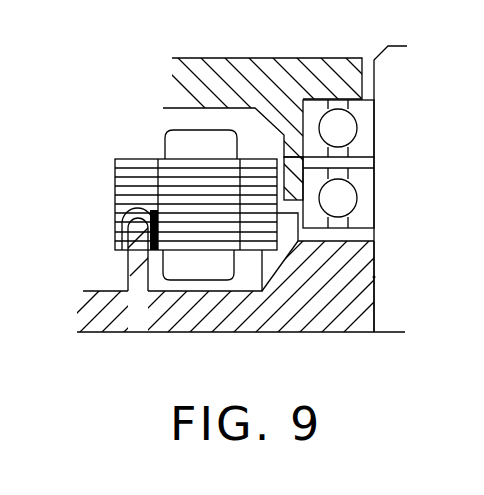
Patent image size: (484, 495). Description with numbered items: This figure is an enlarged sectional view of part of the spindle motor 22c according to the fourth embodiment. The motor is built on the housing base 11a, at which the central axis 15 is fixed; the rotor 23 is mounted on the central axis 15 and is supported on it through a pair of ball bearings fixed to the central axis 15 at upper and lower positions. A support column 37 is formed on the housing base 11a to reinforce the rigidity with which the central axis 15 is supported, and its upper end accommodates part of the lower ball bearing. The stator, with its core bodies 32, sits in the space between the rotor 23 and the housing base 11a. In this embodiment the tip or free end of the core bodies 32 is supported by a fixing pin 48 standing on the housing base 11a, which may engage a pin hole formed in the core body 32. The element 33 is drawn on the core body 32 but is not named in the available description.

The housing base 11a is at (237, 333).
The central axis 15 is at (379, 51).
The spindle motor 22c is at (137, 72).
The rotor 23 is at (233, 59).
The core body 32 is at (114, 178).
The stator winding 33 is at (166, 141).
The support column 37 is at (375, 277).
The fixing pin 48 is at (128, 270).